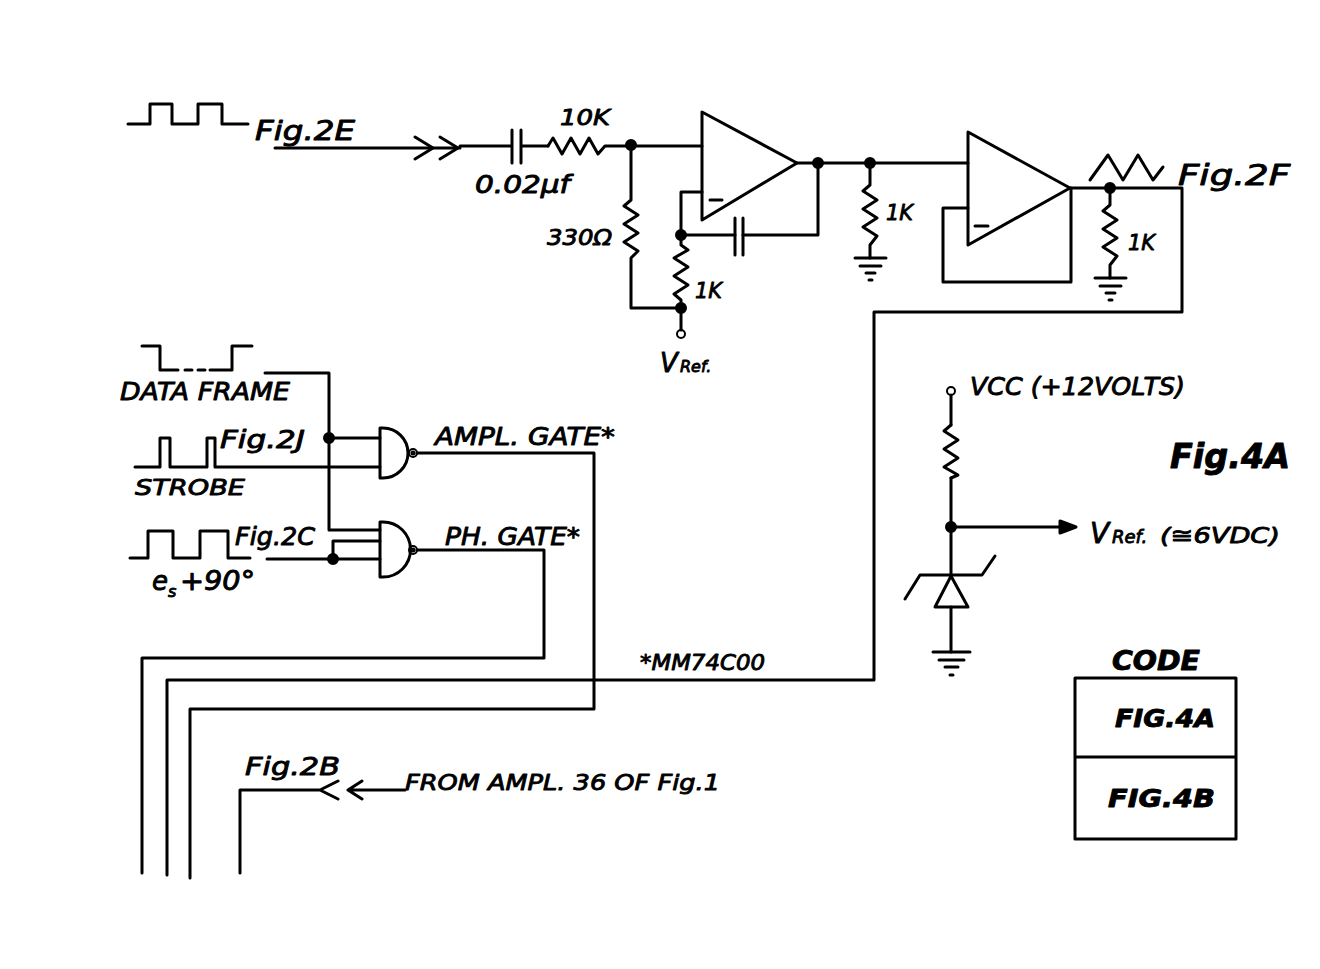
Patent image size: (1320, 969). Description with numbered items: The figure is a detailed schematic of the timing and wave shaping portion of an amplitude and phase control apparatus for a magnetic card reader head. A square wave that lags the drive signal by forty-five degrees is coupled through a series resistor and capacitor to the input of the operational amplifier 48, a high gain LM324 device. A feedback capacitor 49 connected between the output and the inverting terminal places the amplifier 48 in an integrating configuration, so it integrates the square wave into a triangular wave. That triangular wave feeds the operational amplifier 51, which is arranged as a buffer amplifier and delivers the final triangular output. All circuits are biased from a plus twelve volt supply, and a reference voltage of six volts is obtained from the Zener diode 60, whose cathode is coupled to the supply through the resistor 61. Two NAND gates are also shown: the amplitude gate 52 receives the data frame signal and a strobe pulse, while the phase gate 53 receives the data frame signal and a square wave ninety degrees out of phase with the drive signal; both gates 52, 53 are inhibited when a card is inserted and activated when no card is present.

The operational amplifier 48 is at (757, 142).
The feedback capacitor 49 is at (735, 268).
The operational amplifier 51 is at (1000, 144).
The amplitude gate 52 is at (395, 438).
The phase gate 53 is at (393, 530).
The Zener diode 60 is at (938, 604).
The resistor 61 is at (942, 438).